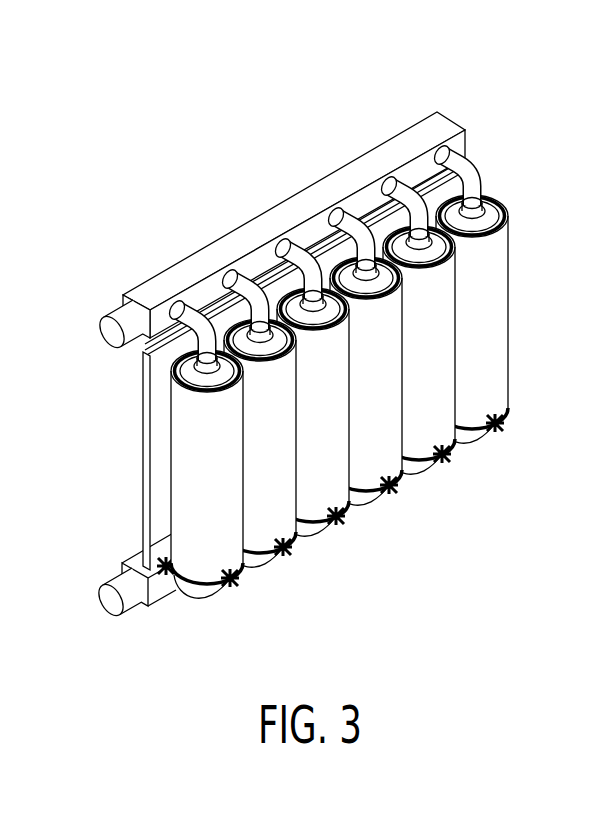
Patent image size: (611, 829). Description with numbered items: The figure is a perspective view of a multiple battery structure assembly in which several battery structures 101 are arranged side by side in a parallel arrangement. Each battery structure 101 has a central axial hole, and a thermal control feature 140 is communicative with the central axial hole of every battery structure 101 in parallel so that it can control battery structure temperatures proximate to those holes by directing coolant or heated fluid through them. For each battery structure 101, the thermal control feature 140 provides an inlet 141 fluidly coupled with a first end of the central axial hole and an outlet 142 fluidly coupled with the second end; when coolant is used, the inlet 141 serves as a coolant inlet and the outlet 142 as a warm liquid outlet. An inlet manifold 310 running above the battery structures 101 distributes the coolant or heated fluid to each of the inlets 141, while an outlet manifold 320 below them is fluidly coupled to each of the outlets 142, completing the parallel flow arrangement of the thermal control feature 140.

The battery structure 101 is at (236, 584).
The thermal control feature 140 is at (185, 355).
The inlet 141 is at (176, 306).
The outlet 142 is at (203, 590).
The inlet manifold 310 is at (192, 262).
The outlet manifold 320 is at (162, 596).